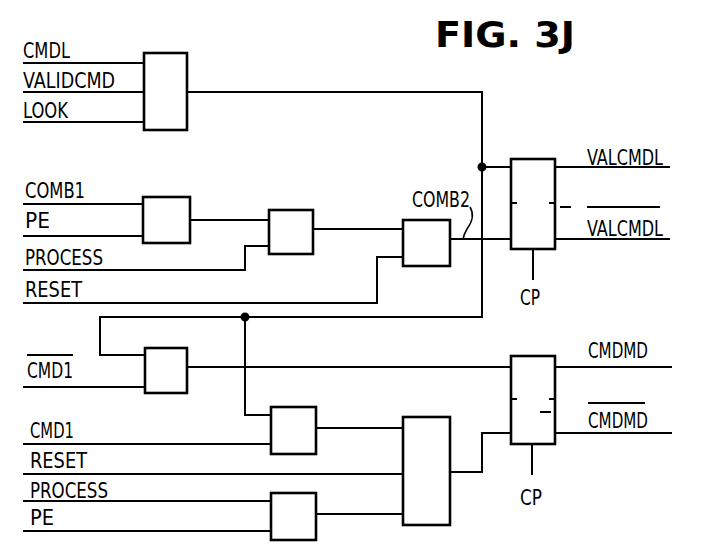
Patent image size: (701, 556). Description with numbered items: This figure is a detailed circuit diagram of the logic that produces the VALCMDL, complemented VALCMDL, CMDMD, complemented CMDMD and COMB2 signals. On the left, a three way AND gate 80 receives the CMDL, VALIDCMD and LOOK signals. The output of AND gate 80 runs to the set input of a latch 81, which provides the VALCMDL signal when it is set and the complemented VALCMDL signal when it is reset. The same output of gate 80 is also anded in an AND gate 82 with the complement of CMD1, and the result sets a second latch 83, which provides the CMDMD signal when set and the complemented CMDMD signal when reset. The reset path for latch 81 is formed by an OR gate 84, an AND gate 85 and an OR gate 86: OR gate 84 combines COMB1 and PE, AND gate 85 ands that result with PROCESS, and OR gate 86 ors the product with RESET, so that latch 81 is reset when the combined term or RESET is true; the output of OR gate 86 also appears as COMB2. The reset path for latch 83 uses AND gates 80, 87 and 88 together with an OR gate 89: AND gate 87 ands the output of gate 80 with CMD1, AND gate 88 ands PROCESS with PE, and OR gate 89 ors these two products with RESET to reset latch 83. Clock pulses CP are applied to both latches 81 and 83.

The three way AND gate 80 is at (187, 72).
The latch 81 is at (535, 159).
The AND gate 82 is at (180, 348).
The latch 83 is at (525, 356).
The OR gate 84 is at (178, 197).
The AND gate 85 is at (285, 210).
The OR gate 86 is at (425, 266).
The AND gate 87 is at (305, 407).
The AND gate 88 is at (316, 503).
The OR gate 89 is at (430, 417).